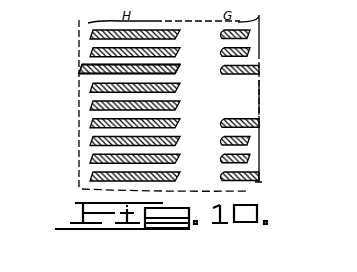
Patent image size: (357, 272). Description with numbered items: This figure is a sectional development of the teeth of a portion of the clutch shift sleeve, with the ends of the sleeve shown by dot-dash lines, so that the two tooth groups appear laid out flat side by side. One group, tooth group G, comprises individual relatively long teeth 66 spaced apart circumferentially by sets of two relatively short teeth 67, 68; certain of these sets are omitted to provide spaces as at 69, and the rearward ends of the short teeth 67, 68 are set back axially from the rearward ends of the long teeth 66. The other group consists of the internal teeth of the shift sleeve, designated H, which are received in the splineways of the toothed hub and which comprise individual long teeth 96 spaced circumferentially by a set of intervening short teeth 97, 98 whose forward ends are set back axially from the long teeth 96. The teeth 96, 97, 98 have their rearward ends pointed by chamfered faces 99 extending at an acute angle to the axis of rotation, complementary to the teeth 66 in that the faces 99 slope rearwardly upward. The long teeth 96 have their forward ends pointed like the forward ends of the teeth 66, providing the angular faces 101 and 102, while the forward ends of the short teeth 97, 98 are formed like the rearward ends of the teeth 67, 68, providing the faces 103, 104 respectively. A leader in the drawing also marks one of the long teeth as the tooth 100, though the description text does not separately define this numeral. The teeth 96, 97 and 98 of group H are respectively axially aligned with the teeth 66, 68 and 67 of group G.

The long teeth 66 is at (259, 127).
The short tooth 67 is at (248, 160).
The short tooth 68 is at (248, 142).
The space 69 is at (242, 89).
The long teeth 96 is at (88, 65).
The short tooth 97 is at (90, 87).
The short tooth 98 is at (93, 107).
The chamfered faces 99 is at (179, 65).
The slat 100 is at (130, 71).
The angular face 101 is at (87, 69).
The angular face 102 is at (86, 79).
The face 103 is at (88, 147).
The face 104 is at (90, 157).